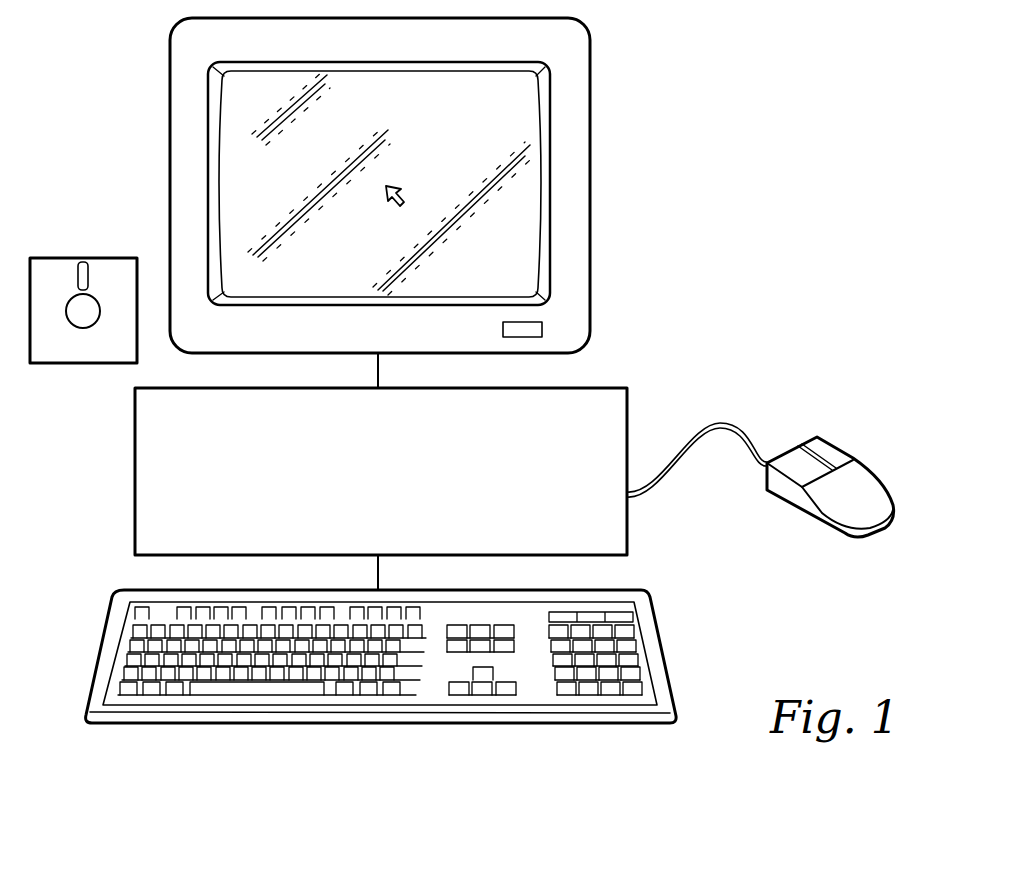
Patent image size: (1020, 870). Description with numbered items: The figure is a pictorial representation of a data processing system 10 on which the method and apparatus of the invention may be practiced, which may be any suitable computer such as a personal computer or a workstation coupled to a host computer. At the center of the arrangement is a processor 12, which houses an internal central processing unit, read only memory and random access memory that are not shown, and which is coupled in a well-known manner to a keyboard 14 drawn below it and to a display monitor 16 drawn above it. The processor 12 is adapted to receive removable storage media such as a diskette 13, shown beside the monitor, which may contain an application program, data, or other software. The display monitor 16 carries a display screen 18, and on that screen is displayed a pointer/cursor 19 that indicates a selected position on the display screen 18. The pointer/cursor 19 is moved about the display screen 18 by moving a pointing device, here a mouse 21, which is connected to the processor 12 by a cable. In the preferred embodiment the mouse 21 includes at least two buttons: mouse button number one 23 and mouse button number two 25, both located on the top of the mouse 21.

The data processing system 10 is at (700, 314).
The processor 12 is at (632, 404).
The diskette 13 is at (97, 261).
The keyboard 14 is at (662, 646).
The display monitor 16 is at (592, 241).
The display screen 18 is at (535, 158).
The pointer/cursor 19 is at (406, 191).
The mouse 21 is at (760, 491).
The mouse button number one 23 is at (788, 450).
The mouse button number two 25 is at (822, 437).